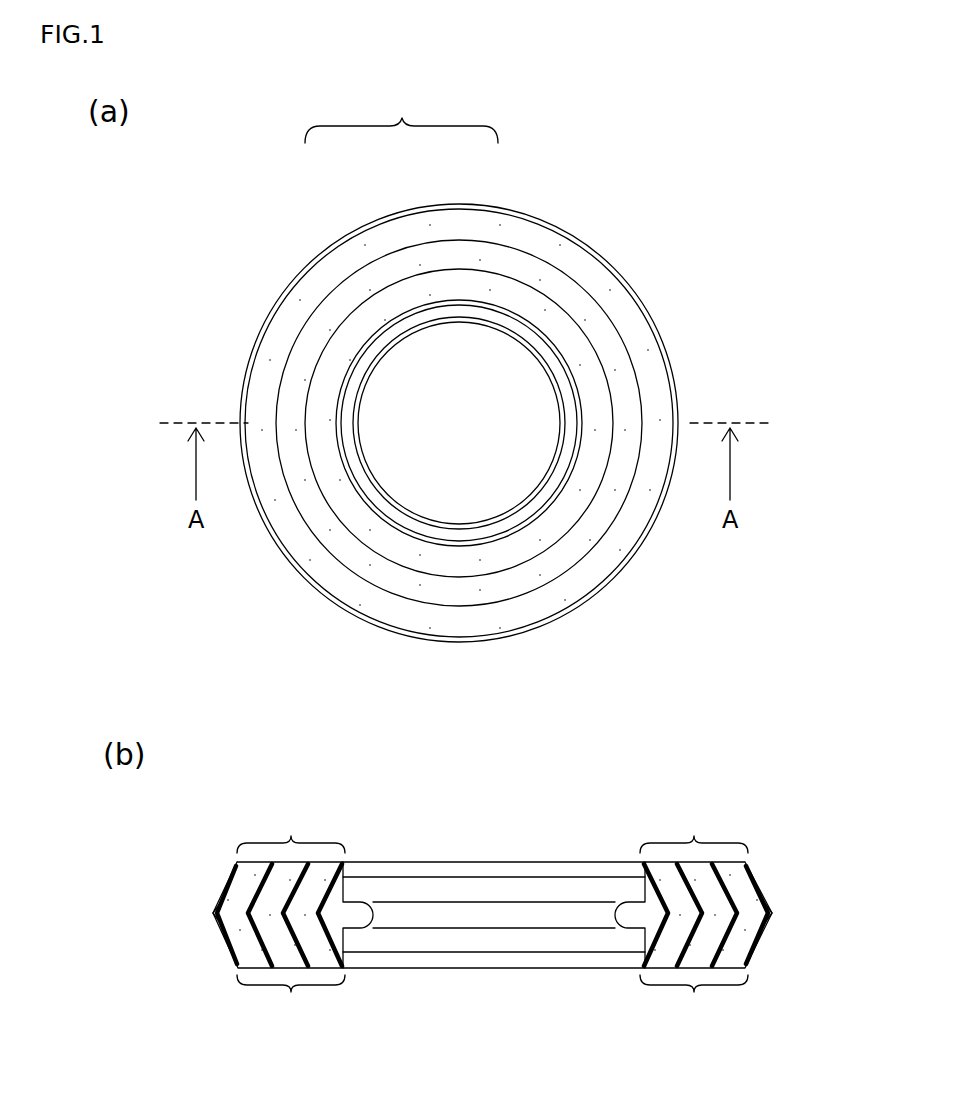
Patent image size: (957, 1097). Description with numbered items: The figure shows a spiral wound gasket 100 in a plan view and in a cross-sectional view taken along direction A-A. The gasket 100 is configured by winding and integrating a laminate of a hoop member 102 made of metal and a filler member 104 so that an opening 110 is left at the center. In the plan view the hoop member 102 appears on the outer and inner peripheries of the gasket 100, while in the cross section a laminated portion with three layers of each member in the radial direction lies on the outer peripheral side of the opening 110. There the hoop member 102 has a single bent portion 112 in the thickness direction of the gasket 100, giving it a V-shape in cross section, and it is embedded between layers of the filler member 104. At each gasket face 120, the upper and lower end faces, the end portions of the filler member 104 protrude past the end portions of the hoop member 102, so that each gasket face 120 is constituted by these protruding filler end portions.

The spiral wound gasket 100 is at (633, 240).
The hoop member 102 is at (405, 308).
The filler member 104 is at (378, 308).
The opening 110 is at (448, 518).
The bent portion 112 is at (213, 915).
The gasket face 120 is at (492, 558).